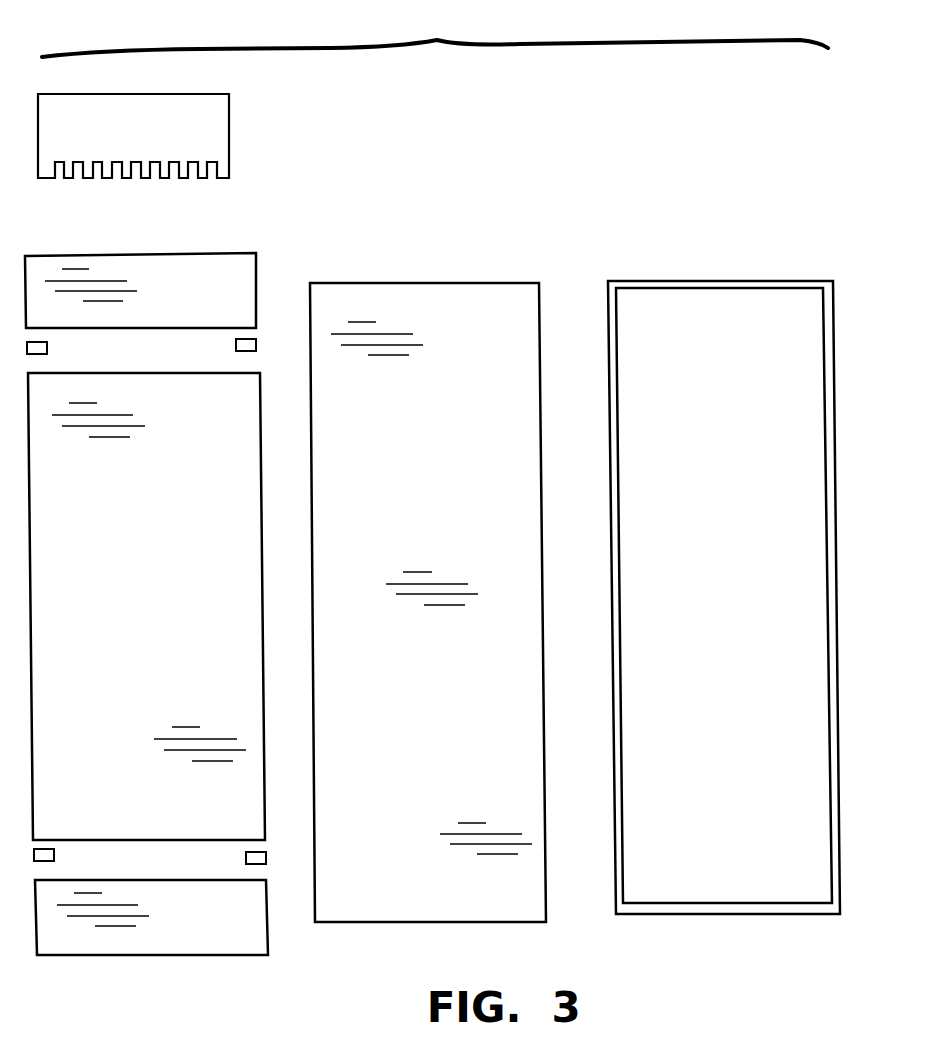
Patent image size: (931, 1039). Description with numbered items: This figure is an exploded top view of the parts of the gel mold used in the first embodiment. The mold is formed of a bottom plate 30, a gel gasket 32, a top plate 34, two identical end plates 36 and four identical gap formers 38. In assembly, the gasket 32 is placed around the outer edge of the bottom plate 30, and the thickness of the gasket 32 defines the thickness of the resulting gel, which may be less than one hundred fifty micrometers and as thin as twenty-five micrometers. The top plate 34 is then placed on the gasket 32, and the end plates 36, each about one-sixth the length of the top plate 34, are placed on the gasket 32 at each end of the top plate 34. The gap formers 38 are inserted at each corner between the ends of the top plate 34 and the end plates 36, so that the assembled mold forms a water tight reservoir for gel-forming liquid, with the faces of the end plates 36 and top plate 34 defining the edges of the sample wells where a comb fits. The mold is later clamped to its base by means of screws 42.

The bottom plate 30 is at (435, 330).
The gel gasket 32 is at (755, 285).
The top plate 34 is at (167, 491).
The end plate 36 is at (242, 268).
The gap former 38 is at (248, 346).
The screw 42 is at (212, 128).